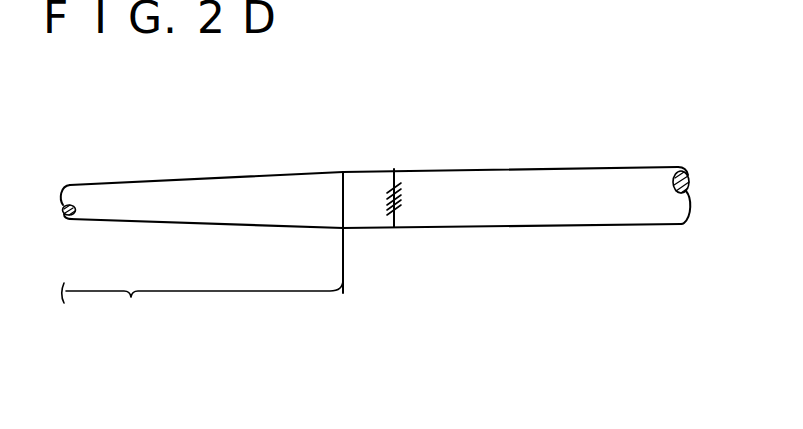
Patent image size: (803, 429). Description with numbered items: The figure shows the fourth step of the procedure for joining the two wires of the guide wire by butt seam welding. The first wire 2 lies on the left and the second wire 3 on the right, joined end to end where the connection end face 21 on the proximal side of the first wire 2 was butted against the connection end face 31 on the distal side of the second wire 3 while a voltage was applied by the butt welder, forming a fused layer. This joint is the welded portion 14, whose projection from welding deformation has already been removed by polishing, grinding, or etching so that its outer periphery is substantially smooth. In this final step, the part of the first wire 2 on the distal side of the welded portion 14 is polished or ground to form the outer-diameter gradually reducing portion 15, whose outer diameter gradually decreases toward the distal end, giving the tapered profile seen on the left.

The first wire 2 is at (241, 201).
The second wire 3 is at (552, 181).
The connection end face 31 is at (385, 200).
The welded portion 14 is at (394, 228).
The connection end face 21 is at (398, 181).
The outer-diameter gradually reducing portion 15 is at (202, 311).